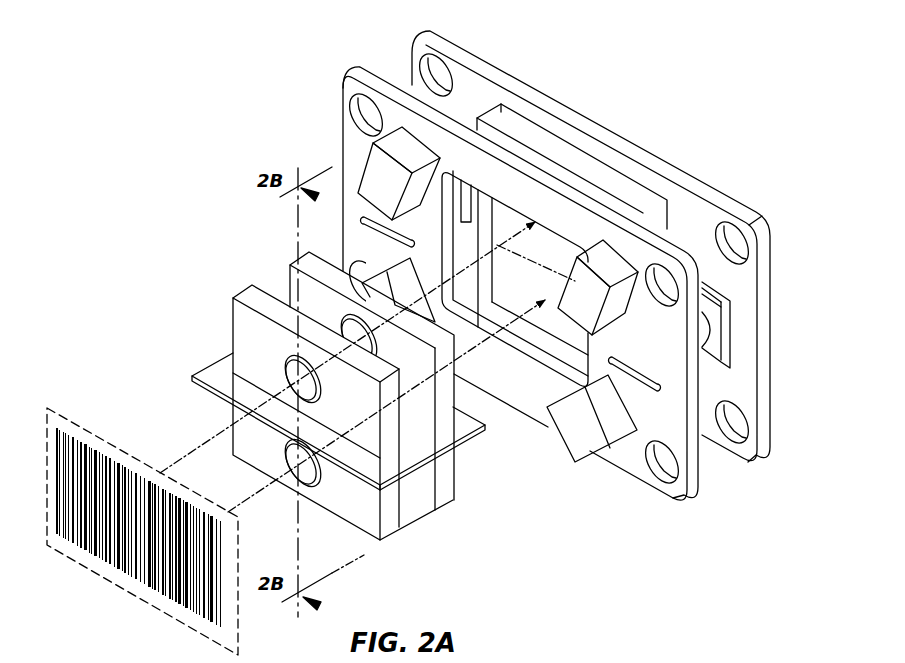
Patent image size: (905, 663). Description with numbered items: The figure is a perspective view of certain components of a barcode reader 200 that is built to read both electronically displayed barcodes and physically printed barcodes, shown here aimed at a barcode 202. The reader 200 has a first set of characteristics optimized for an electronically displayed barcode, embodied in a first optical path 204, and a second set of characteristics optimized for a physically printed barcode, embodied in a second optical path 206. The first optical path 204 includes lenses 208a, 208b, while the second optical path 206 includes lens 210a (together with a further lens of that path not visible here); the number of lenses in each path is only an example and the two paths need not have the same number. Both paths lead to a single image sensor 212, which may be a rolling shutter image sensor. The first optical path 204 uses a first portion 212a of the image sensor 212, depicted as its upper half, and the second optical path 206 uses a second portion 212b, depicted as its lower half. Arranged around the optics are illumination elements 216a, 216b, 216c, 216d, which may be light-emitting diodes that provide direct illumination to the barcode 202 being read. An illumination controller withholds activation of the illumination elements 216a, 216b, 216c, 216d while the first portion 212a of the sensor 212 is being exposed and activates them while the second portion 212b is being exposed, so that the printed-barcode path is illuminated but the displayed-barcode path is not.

The barcode reader 200 is at (171, 136).
The barcode 202 is at (67, 537).
The first optical path 204 is at (468, 265).
The second optical path 206 is at (502, 328).
The lens 208a is at (299, 380).
The lens 208b is at (356, 339).
The lens 210a is at (297, 461).
The image sensor 212 is at (620, 184).
The first portion of the image sensor 212a is at (551, 241).
The second portion of the image sensor 212b is at (517, 280).
The illumination element 216a is at (364, 168).
The illumination element 216b is at (365, 275).
The illumination element 216c is at (597, 295).
The illumination element 216d is at (587, 443).